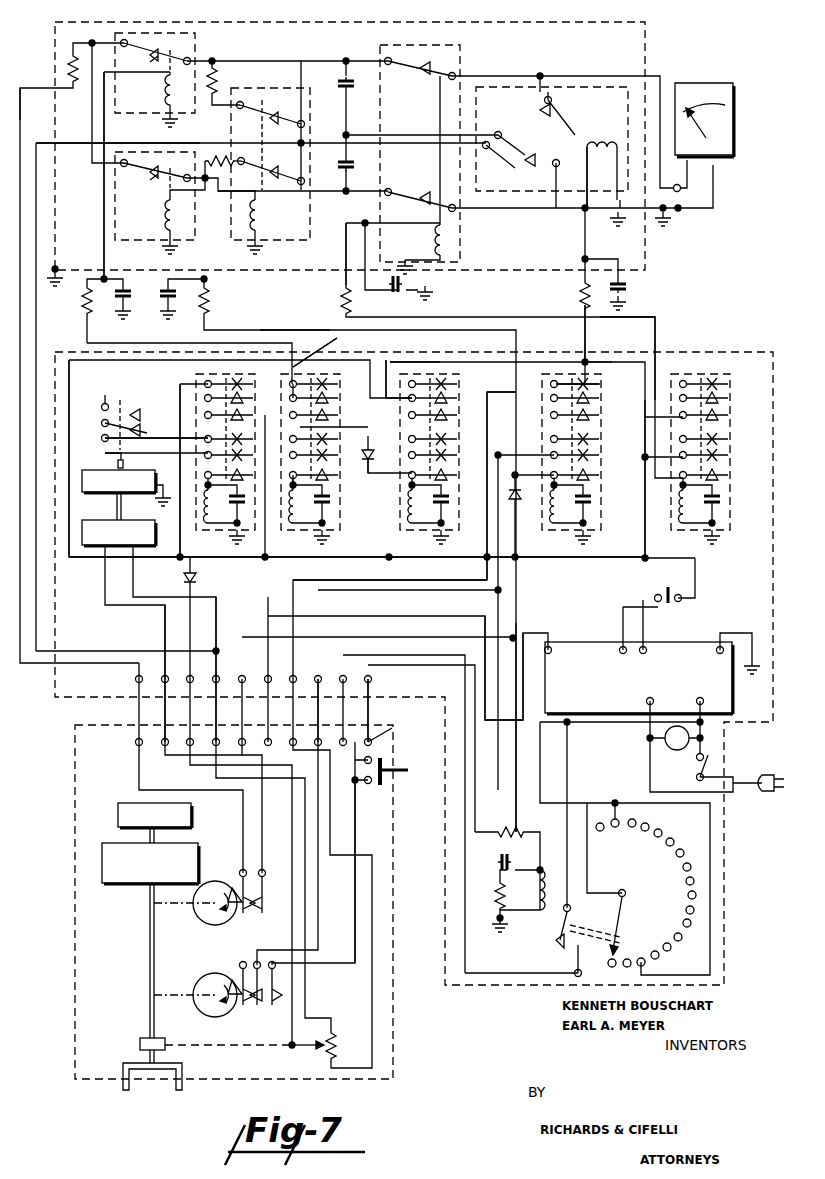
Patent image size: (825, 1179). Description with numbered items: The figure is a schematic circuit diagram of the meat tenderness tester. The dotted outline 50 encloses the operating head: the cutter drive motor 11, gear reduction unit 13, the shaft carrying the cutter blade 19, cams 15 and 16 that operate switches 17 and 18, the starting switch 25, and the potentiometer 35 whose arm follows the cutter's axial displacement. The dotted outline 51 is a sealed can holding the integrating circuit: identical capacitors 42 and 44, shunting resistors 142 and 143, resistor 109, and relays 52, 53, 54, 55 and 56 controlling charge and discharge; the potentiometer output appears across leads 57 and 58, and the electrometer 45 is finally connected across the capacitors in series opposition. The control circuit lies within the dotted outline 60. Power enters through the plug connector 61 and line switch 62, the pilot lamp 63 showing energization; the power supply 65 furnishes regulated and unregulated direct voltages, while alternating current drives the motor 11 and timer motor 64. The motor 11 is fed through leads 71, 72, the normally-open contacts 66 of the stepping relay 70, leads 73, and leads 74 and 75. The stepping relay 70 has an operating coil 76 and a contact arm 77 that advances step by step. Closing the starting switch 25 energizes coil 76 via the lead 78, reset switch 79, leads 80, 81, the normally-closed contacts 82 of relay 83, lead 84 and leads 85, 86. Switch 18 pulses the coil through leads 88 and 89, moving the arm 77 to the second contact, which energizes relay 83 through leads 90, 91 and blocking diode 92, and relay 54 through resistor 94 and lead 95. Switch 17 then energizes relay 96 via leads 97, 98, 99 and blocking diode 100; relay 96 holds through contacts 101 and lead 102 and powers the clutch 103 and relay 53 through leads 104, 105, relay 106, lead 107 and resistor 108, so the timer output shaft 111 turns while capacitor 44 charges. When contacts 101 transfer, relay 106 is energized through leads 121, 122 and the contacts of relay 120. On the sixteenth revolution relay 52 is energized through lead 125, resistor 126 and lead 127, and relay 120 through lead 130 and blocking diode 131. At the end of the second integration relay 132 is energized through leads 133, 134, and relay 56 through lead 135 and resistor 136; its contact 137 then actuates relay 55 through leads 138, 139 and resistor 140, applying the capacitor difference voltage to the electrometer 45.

The cutter drive motor 11 is at (126, 802).
The gear reduction unit 13 is at (104, 842).
The cam 15 is at (215, 882).
The cam 16 is at (206, 974).
The switch 17 is at (256, 915).
The switch 18 is at (261, 1005).
The cutter blade 19 is at (126, 1062).
The starting switch 25 is at (406, 770).
The potentiometer 35 is at (356, 1033).
The capacitor 42 is at (328, 86).
The capacitor 44 is at (327, 150).
The electrometer 45 is at (702, 81).
The dotted outline 50 is at (412, 809).
The dotted outline 51 is at (655, 37).
The relay 52 is at (172, 78).
The relay 53 is at (135, 207).
The relay 54 is at (328, 242).
The relay 55 is at (439, 145).
The relay 56 is at (560, 76).
The lead 57 is at (36, 88).
The lead 58 is at (70, 143).
The dotted outline 60 is at (680, 352).
The plug connector 61 is at (782, 775).
The line switch 62 is at (713, 758).
The pilot lamp 63 is at (672, 750).
The timer motor 64 is at (96, 558).
The power supply 65 is at (732, 701).
The normally-open contacts 66 is at (567, 954).
The stepping relay 70 is at (663, 883).
The lead 71 is at (621, 730).
The lead 72 is at (556, 782).
The lead 73 is at (486, 868).
The lead 74 is at (322, 698).
The lead 75 is at (524, 718).
The operating coil 76 is at (565, 910).
The contact arm 77 is at (618, 920).
The lead 78 is at (643, 600).
The reset switch 79 is at (678, 590).
The lead 80 is at (138, 558).
The lead 81 is at (490, 424).
The normally-closed contacts 82 is at (590, 388).
The relay 83 is at (550, 538).
The lead 84 is at (487, 392).
The lead 85 is at (388, 739).
The lead 86 is at (368, 709).
The lead 88 is at (504, 572).
The lead 89 is at (358, 810).
The lead 90 is at (708, 934).
The lead 91 is at (517, 766).
The blocking diode 92 is at (518, 502).
The voltage-dropping resistor 94 is at (240, 305).
The lead 95 is at (300, 330).
The relay 96 is at (226, 535).
The lead 97 is at (498, 775).
The lead 98 is at (241, 642).
The lead 99 is at (137, 708).
The blocking diode 100 is at (196, 579).
The normally-closed contacts 101 is at (136, 398).
The lead 102 is at (104, 404).
The clutch 103 is at (107, 496).
The lead 104 is at (183, 393).
The lead 105 is at (165, 430).
The relay 106 is at (308, 535).
The lead 107 is at (337, 338).
The voltage-dropping resistor 108 is at (198, 313).
The resistor 109 is at (64, 62).
The output shaft 111 is at (113, 466).
The relay 120 is at (422, 535).
The lead 121 is at (112, 362).
The lead 122 is at (387, 407).
The lead 125 is at (120, 338).
The voltage dropping resistor 126 is at (80, 304).
The lead 127 is at (102, 218).
The lead 130 is at (370, 448).
The blocking diode 131 is at (368, 473).
The relay 132 is at (692, 535).
The lead 133 is at (430, 362).
The lead 134 is at (612, 360).
The lead 135 is at (578, 328).
The voltage-dropping resistor 136 is at (584, 293).
The contact 137 is at (716, 392).
The lead 138 is at (645, 523).
The lead 139 is at (638, 317).
The voltage-dropping resistor 140 is at (344, 317).
The shunting resistor 142 is at (220, 75).
The shunting resistor 143 is at (216, 154).